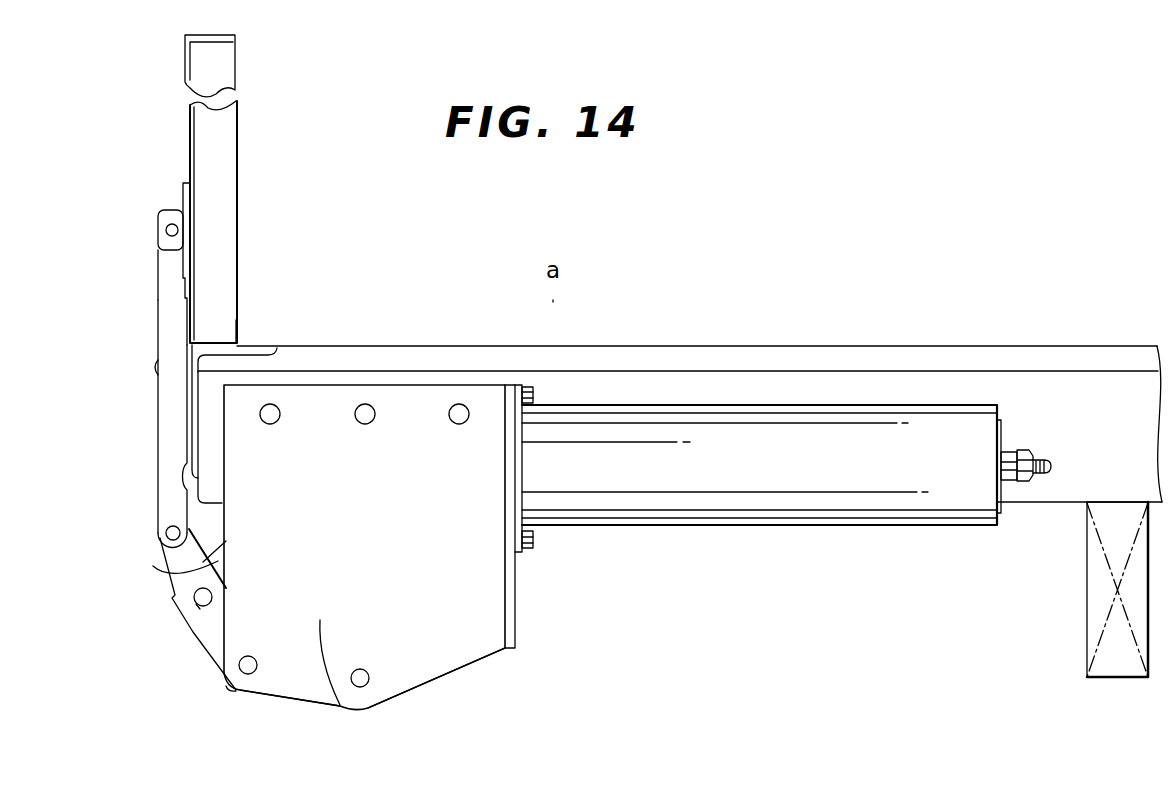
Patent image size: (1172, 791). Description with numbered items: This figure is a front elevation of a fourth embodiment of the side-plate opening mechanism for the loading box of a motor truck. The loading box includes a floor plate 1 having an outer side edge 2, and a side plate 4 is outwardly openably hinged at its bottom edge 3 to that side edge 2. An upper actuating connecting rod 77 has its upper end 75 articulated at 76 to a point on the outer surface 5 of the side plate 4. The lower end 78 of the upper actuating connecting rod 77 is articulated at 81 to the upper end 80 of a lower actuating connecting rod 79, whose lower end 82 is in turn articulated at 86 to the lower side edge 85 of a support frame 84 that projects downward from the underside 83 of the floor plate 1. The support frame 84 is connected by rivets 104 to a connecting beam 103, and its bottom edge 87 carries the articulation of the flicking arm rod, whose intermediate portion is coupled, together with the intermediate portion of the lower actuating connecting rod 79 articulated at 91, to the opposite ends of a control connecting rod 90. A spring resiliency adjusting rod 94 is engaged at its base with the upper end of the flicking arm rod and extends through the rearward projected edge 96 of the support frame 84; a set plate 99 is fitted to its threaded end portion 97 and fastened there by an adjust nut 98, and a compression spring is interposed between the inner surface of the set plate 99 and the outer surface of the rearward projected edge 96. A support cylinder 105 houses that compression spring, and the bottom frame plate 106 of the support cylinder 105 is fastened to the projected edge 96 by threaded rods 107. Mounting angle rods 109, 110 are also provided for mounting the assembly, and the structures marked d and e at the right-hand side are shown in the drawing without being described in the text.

The floor plate 1 is at (458, 358).
The outer side edge 2 is at (222, 363).
The bottom edge 3 is at (212, 331).
The side plate 4 is at (197, 118).
The outer surface 5 is at (190, 148).
The articulation point 76 is at (161, 222).
The upper end 75 is at (164, 254).
The mounting angle rod 110 is at (183, 305).
The upper actuating connecting rod 77 is at (163, 339).
The mounting angle rod 109 is at (193, 397).
The connecting beam 103 is at (206, 434).
The lower end 78 is at (173, 520).
The articulation point 81 is at (166, 534).
The upper end 80 is at (170, 560).
The control connecting rod 90 is at (170, 578).
The articulation point 91 is at (199, 606).
The lower actuating connecting rod 79 is at (212, 668).
The lower end 82 is at (240, 690).
The underside 83 is at (362, 371).
The rivets 104 is at (277, 406).
The articulation point 86 is at (248, 675).
The lower side edge 85 is at (268, 674).
The support frame 84 is at (340, 705).
The bottom edge 87 is at (386, 686).
The rearward projected edge 96 is at (516, 620).
The bottom frame plate 106 is at (521, 478).
The threaded rods 107 is at (531, 392).
The support cylinder 105 is at (722, 483).
The set plate 99 is at (997, 500).
The adjust nut 98 is at (1009, 481).
The threaded end portion 97 is at (1023, 482).
The spring resiliency adjusting rod 94 is at (1045, 472).
The post d is at (1150, 500).
The cross brace e is at (1102, 602).